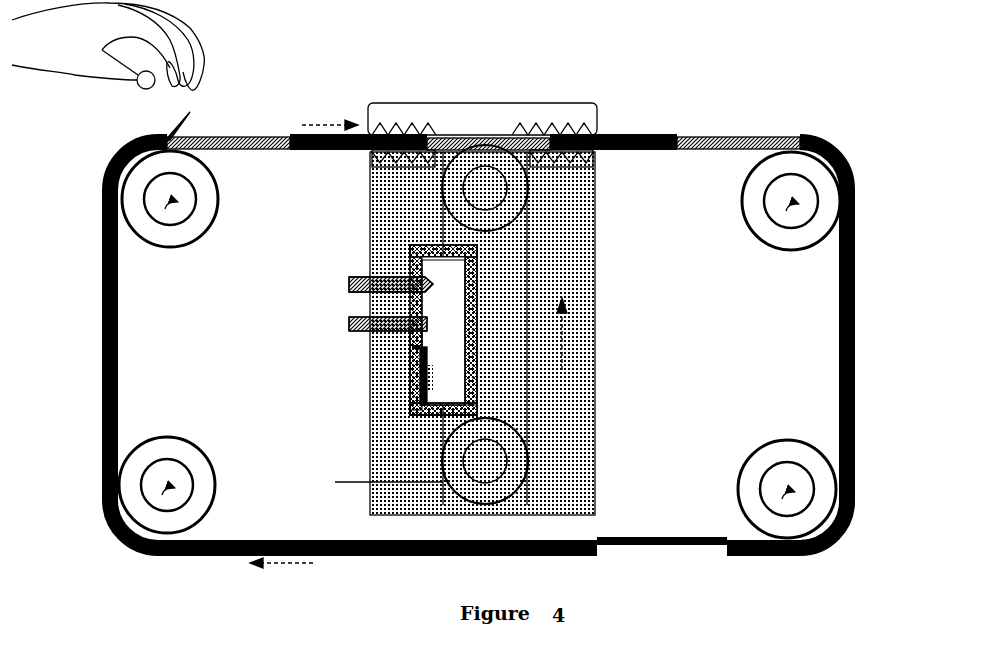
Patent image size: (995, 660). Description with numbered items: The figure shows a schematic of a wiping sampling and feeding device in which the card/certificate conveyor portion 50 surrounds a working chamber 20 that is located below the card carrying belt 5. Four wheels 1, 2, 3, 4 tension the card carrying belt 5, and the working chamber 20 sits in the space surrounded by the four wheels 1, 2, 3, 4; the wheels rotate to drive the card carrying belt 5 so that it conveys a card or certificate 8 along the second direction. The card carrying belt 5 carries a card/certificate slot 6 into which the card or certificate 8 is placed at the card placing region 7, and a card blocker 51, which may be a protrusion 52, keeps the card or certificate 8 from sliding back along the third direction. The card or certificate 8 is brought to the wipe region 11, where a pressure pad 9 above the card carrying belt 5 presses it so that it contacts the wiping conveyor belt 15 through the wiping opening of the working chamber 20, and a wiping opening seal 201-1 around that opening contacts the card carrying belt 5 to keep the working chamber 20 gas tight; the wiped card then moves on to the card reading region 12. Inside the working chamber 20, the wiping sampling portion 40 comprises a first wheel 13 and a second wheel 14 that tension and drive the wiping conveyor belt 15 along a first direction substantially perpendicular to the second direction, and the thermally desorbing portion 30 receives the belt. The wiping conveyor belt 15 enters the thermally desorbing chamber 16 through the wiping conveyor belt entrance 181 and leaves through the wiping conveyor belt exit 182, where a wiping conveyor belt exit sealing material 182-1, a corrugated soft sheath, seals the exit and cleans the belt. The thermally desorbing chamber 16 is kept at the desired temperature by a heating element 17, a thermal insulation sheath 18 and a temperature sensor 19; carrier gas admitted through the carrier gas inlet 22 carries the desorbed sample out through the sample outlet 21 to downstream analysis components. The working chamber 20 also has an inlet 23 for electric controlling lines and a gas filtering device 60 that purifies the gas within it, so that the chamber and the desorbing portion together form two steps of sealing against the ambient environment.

The wheel 1 is at (160, 200).
The wheel 2 is at (795, 203).
The wheel 3 is at (790, 490).
The wheel 4 is at (160, 485).
The card carrying belt 5 is at (260, 537).
The card/certificate slot 6 is at (802, 137).
The card placing region 7 is at (168, 128).
The card or certificate 8 is at (220, 140).
The pressure pad 9 is at (462, 112).
The wipe region 11 is at (510, 137).
The card reading region 12 is at (733, 123).
The first wheel 13 is at (487, 194).
The second wheel 14 is at (500, 470).
The wiping conveyor belt 15 is at (530, 285).
The thermally desorbing chamber 16 is at (410, 246).
The heating element 17 is at (412, 403).
The thermal insulation sheath 18 is at (412, 392).
The temperature sensor 19 is at (412, 370).
The working chamber 20 is at (370, 240).
The sample outlet 21 is at (352, 320).
The carrier gas inlet 22 is at (352, 283).
The inlet for electric controlling lines 23 is at (362, 480).
The thermally desorbing portion 30 is at (408, 346).
The wiping sampling portion 40 is at (503, 461).
The card/certificate conveyor portion 50 is at (102, 292).
The card blocker 51 is at (190, 112).
The protrusion 52 is at (647, 134).
The gas filtering device 60 is at (425, 369).
The wiping conveyor belt entrance 181 is at (440, 250).
The wiping conveyor belt exit 182 is at (470, 432).
The wiping conveyor belt exit sealing material 182-1 is at (463, 395).
The wiping opening seal 201-1 is at (565, 158).